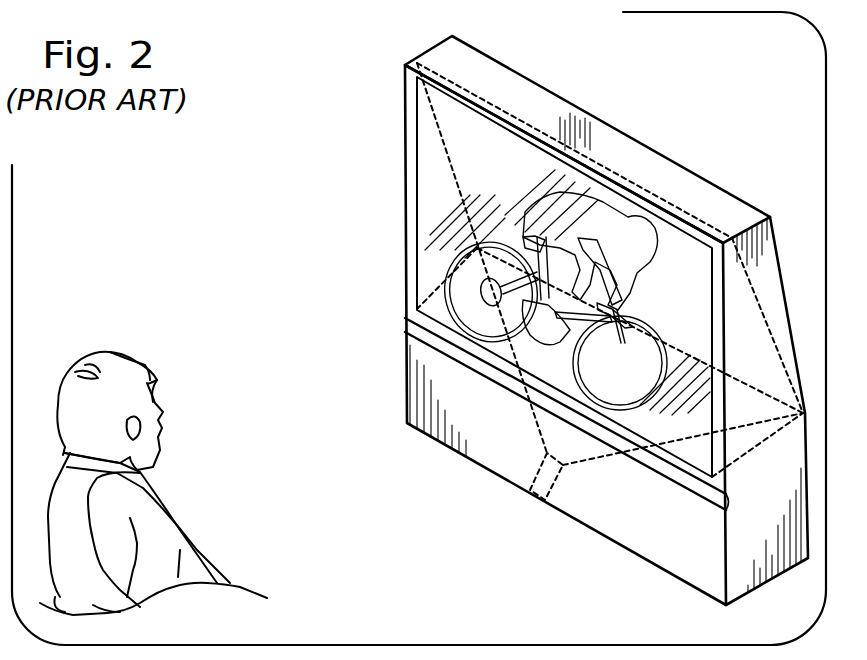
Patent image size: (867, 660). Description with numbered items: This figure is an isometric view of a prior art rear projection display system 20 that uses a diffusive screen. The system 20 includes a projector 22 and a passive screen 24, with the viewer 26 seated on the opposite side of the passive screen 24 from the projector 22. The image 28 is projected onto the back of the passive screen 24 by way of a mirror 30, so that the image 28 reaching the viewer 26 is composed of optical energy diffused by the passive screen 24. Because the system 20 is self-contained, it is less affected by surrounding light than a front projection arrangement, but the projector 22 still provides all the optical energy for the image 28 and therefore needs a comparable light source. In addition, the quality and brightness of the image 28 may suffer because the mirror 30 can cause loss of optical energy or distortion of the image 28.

The rear projection display system 20 is at (302, 160).
The projector 22 is at (530, 491).
The passive screen 24 is at (436, 178).
The viewer 26 is at (108, 351).
The image 28 is at (615, 208).
The mirror 30 is at (761, 367).